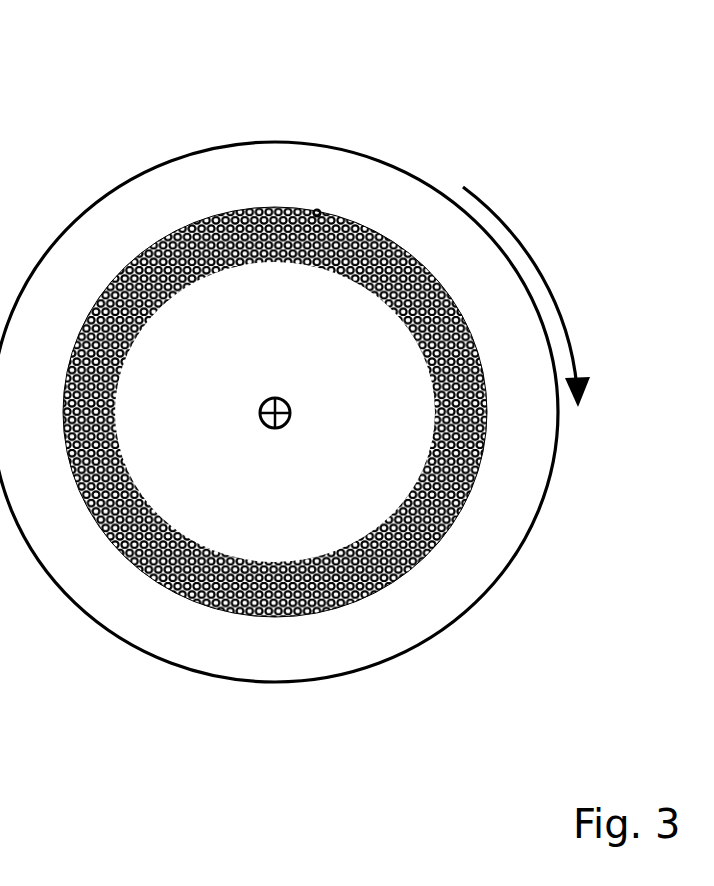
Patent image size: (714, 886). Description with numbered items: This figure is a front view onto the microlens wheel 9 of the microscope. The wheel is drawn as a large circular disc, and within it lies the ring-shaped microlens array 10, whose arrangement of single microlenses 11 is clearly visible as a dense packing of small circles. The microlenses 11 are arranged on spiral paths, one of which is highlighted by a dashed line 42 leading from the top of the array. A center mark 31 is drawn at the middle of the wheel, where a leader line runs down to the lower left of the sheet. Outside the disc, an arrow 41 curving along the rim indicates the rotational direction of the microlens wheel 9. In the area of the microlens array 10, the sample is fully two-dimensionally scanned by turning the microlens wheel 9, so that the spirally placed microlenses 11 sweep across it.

The microlens wheel 9 is at (277, 692).
The microlens array 10 is at (420, 579).
The microlenses 11 is at (447, 532).
The axis of rotation 31 is at (267, 426).
The arrow 41 is at (548, 283).
The dashed line 42 is at (317, 208).